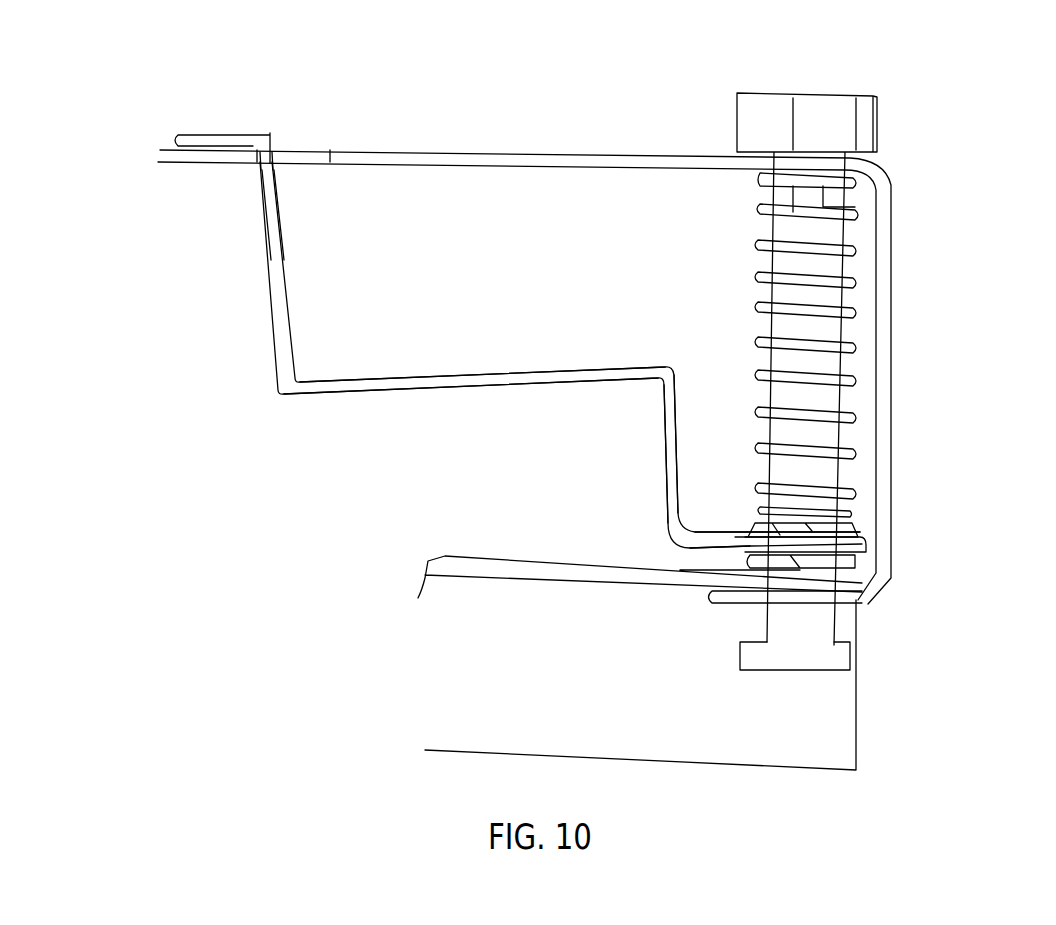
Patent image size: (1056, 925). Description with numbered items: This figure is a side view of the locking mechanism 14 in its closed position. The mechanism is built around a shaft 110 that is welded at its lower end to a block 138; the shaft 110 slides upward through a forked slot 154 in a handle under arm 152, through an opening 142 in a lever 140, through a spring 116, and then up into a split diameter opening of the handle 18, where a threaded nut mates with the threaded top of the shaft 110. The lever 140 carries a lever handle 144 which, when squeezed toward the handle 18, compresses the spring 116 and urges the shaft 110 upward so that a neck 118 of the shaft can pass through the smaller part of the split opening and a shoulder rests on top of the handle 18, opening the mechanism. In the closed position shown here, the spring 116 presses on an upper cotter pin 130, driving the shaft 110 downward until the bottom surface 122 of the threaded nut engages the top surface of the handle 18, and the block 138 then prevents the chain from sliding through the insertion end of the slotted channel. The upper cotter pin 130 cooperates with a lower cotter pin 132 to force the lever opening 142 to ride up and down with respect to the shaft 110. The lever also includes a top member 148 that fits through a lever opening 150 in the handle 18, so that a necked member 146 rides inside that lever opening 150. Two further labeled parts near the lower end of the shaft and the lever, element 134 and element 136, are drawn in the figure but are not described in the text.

The locking mechanism 14 is at (823, 733).
The handle 18 is at (645, 155).
The shaft 110 is at (838, 614).
The spring 116 is at (855, 302).
The neck 118 is at (832, 198).
The bottom surface 122 is at (858, 170).
The upper cotter pin 130 is at (860, 537).
The lower cotter pin 132 is at (857, 565).
The lock washer 134 is at (850, 520).
The lower flange 136 is at (740, 552).
The block 138 is at (850, 657).
The lever 140 is at (323, 460).
The opening 142 is at (778, 525).
The handle 144 is at (548, 372).
The necked member 146 is at (273, 157).
The top member 148 is at (213, 134).
The lever opening 150 is at (294, 168).
The handle under arm 152 is at (720, 604).
The forked slot 154 is at (715, 594).